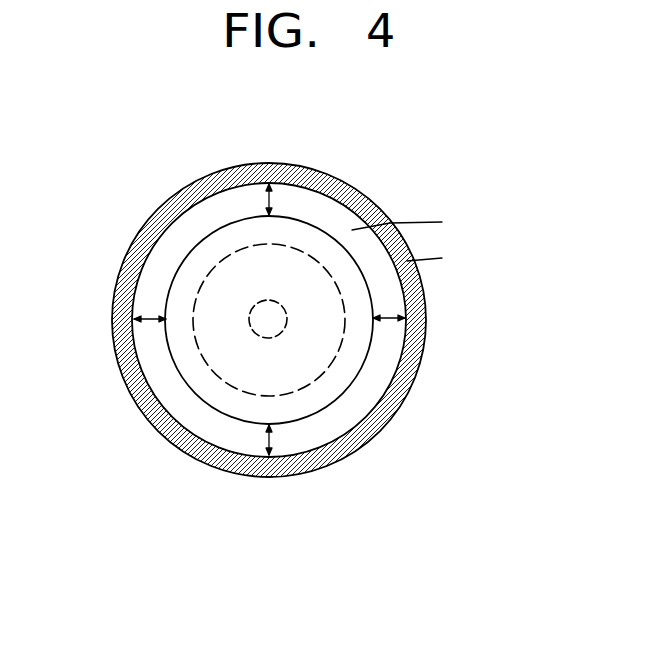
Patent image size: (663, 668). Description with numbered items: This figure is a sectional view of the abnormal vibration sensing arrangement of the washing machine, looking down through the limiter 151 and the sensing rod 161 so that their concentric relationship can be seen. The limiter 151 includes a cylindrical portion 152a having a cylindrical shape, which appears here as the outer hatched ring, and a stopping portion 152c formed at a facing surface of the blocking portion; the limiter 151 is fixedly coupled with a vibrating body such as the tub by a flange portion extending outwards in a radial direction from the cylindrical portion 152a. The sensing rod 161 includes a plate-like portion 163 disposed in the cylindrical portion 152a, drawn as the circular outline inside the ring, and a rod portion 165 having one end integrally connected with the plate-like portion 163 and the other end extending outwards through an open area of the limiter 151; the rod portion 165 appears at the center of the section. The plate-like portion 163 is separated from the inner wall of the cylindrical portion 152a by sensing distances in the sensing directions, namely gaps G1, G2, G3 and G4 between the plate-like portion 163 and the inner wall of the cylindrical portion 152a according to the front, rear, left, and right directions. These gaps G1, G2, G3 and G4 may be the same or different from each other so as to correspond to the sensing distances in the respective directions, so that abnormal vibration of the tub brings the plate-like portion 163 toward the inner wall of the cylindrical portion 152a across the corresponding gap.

The limiter 151 is at (490, 203).
The cylindrical portion 152a is at (444, 258).
The stopping portion 152c is at (417, 222).
The sensing rod 161 is at (478, 355).
The plate-like portion 163 is at (298, 398).
The rod portion 165 is at (268, 320).
The gap G1 is at (272, 440).
The gap G2 is at (271, 199).
The gap G3 is at (143, 318).
The gap G4 is at (394, 318).